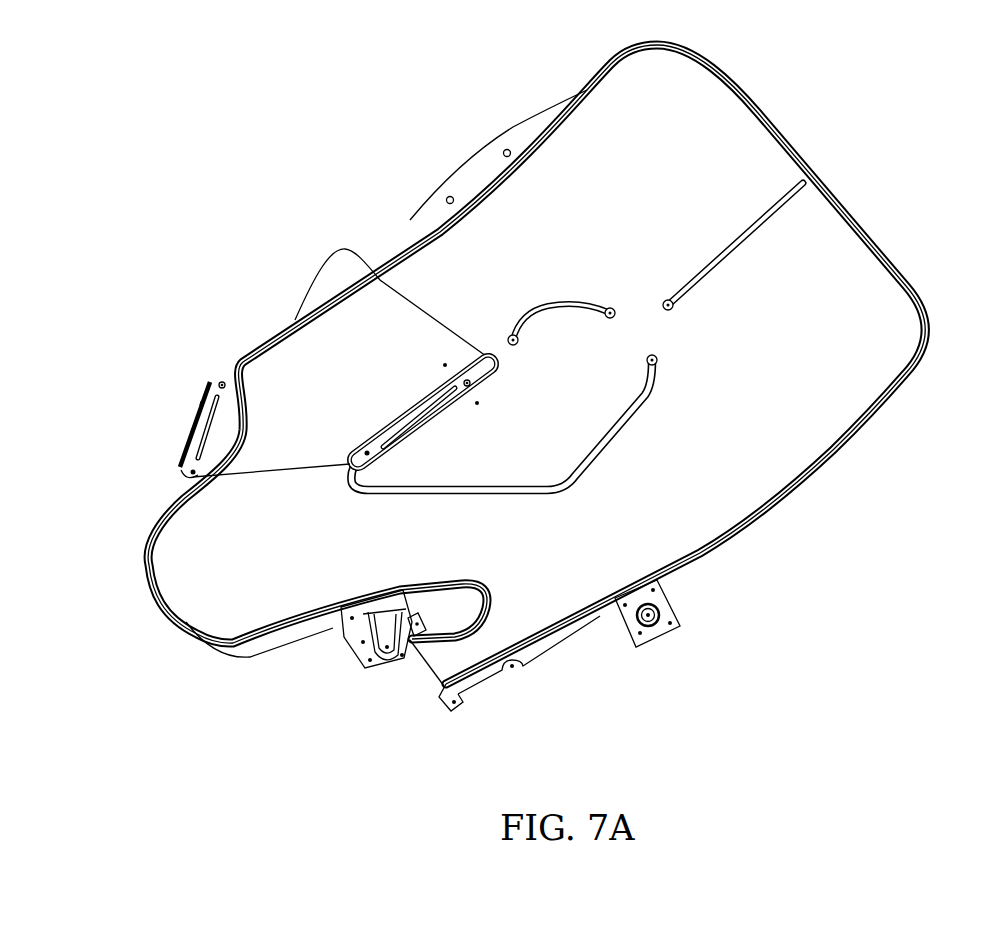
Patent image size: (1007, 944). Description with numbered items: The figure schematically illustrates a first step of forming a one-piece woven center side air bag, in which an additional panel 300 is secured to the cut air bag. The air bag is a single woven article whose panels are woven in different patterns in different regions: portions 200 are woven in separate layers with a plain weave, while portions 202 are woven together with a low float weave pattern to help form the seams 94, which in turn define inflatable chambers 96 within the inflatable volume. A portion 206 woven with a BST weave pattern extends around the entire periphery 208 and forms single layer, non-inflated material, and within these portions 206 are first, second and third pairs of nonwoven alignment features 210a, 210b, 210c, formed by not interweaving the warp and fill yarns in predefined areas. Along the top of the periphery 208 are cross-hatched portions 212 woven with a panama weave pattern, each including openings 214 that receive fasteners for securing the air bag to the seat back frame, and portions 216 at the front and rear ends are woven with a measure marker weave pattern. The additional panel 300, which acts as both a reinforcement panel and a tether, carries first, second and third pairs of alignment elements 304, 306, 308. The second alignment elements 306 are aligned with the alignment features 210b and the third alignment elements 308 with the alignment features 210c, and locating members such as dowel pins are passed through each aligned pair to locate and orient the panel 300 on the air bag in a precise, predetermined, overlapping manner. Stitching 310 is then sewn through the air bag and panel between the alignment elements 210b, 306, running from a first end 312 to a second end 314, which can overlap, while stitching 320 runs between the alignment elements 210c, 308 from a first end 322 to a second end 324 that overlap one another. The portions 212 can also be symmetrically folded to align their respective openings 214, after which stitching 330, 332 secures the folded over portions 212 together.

The plain weave portions 200 is at (497, 380).
The low float weave portions 202 is at (577, 366).
The BST 99 weave portion 206 is at (480, 157).
The periphery 208 is at (523, 378).
The first pair of alignment features 210a is at (507, 138).
The second pair of alignment features 210b is at (408, 428).
The third pair of alignment features 210c is at (169, 411).
The panama weave portions 212 is at (513, 642).
The openings 214 is at (396, 660).
The measure marker weave portions 216 is at (769, 105).
The additional panel 300 is at (355, 280).
The first pair of alignment elements 304 is at (316, 283).
The second alignment elements 306 is at (483, 394).
The third alignment elements 308 is at (169, 411).
The stitching 310 is at (412, 412).
The first end 312 is at (447, 380).
The second end 314 is at (396, 403).
The stitching 320 is at (226, 427).
The first end 322 is at (188, 404).
The second end 324 is at (214, 382).
The stitching 330 is at (677, 602).
The stitching 332 is at (350, 634).
The seams 94 is at (562, 307).
The inflatable chambers 96 is at (590, 348).